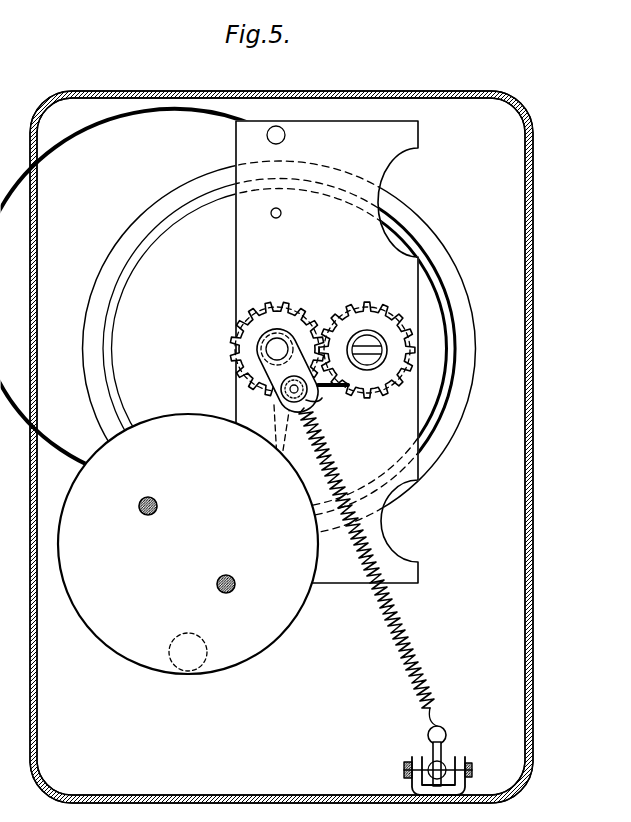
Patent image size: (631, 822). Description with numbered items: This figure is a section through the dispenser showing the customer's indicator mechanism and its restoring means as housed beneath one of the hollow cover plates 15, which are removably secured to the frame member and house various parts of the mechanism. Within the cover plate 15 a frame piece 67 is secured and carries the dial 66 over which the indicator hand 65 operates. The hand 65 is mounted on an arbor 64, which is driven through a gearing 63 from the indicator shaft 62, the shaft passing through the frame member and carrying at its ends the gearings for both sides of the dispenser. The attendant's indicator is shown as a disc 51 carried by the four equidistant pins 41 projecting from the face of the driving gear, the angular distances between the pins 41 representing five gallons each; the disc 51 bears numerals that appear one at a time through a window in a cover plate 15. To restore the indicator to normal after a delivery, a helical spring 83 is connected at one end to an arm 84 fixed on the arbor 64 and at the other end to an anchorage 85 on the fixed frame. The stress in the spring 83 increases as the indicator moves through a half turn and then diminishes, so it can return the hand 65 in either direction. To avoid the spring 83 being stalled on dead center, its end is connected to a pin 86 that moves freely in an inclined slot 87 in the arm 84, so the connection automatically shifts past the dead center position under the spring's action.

The hollow cover plate 15 is at (534, 333).
The pins 41 is at (143, 512).
The disc 51 is at (270, 642).
The indicator shaft 62 is at (378, 360).
The gearing 63 is at (322, 325).
The arbor 64 is at (270, 348).
The indicator hand 65 is at (263, 423).
The dial 66 is at (440, 328).
The frame piece 67 is at (236, 262).
The helical spring 83 is at (380, 600).
The arm 84 is at (258, 368).
The anchorage 85 is at (455, 760).
The pin 86 is at (323, 397).
The inclined slot 87 is at (278, 393).